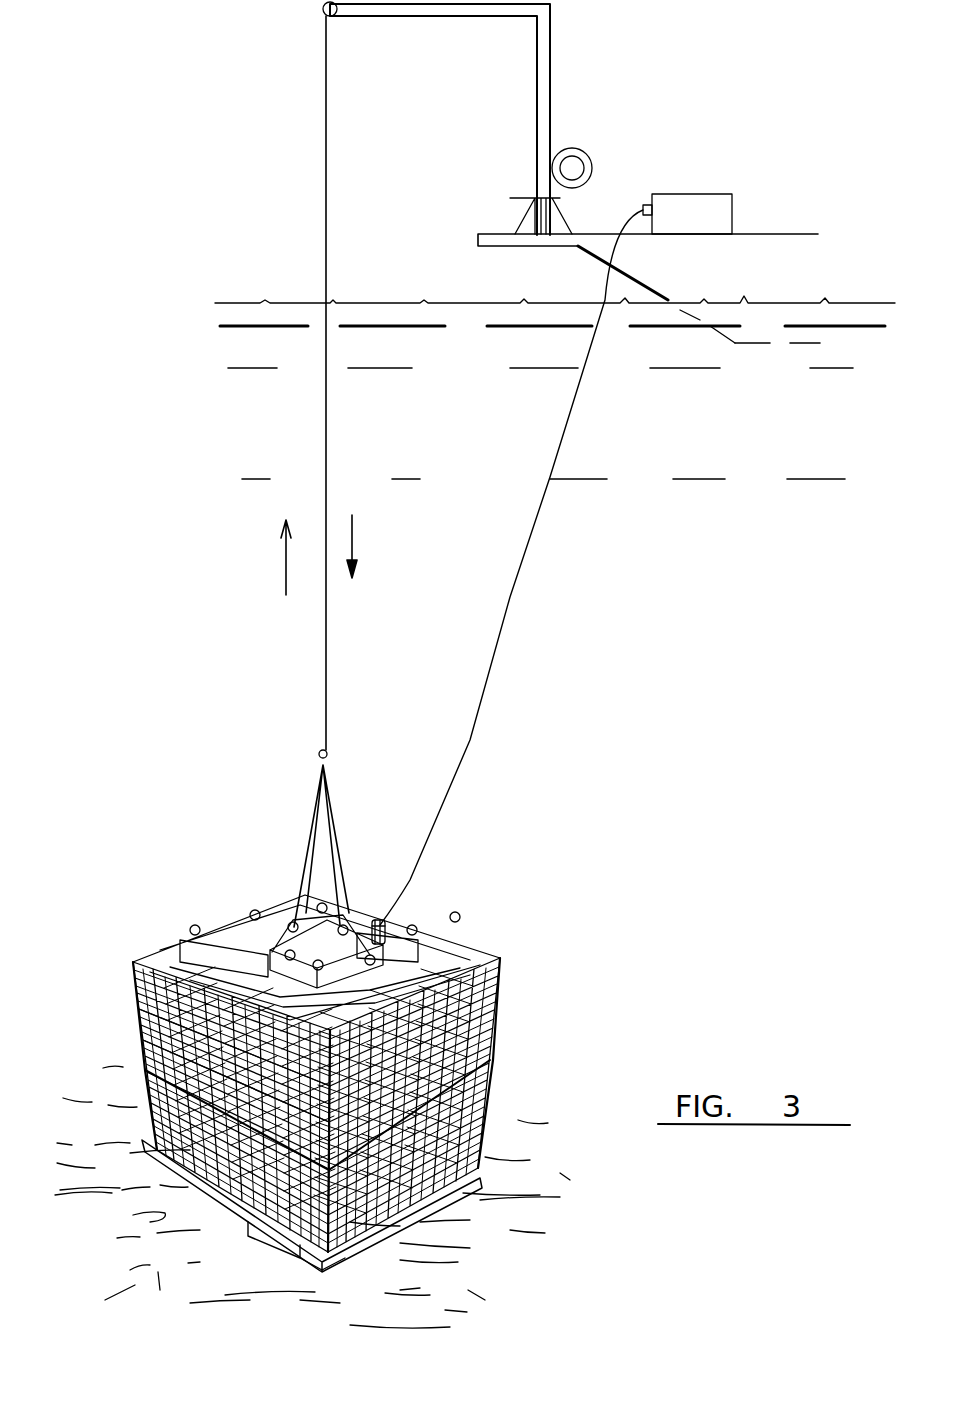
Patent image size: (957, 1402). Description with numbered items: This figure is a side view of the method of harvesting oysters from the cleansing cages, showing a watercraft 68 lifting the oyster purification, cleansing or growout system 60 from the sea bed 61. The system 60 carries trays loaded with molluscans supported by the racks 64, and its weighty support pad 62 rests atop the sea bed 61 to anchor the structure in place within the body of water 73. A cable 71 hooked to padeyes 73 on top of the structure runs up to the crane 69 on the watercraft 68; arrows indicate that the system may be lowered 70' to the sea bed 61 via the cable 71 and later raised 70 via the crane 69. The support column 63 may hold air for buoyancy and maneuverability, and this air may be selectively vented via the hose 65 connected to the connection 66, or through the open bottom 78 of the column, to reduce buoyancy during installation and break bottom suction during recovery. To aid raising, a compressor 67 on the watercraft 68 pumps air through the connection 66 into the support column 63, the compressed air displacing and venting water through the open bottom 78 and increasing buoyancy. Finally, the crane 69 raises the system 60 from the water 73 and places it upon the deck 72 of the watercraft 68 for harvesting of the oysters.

The Oyster Purification/Cleansing, or Growout System 60 is at (500, 1025).
The sea bed 61 is at (520, 1290).
The support pad 62 is at (310, 1270).
The support column 63 is at (230, 930).
The racks 64 is at (135, 1010).
The hose 65 is at (510, 600).
The connection 66 is at (385, 925).
The compressor 67 is at (705, 232).
The watercraft 68 is at (725, 286).
The crane 69 is at (537, 95).
The raised 70 is at (265, 557).
The lowered 70' is at (375, 546).
The cable 71 is at (326, 470).
The deck 72 is at (765, 233).
The padeyes 73 is at (372, 303).
The bottom of the column 78 is at (478, 1160).